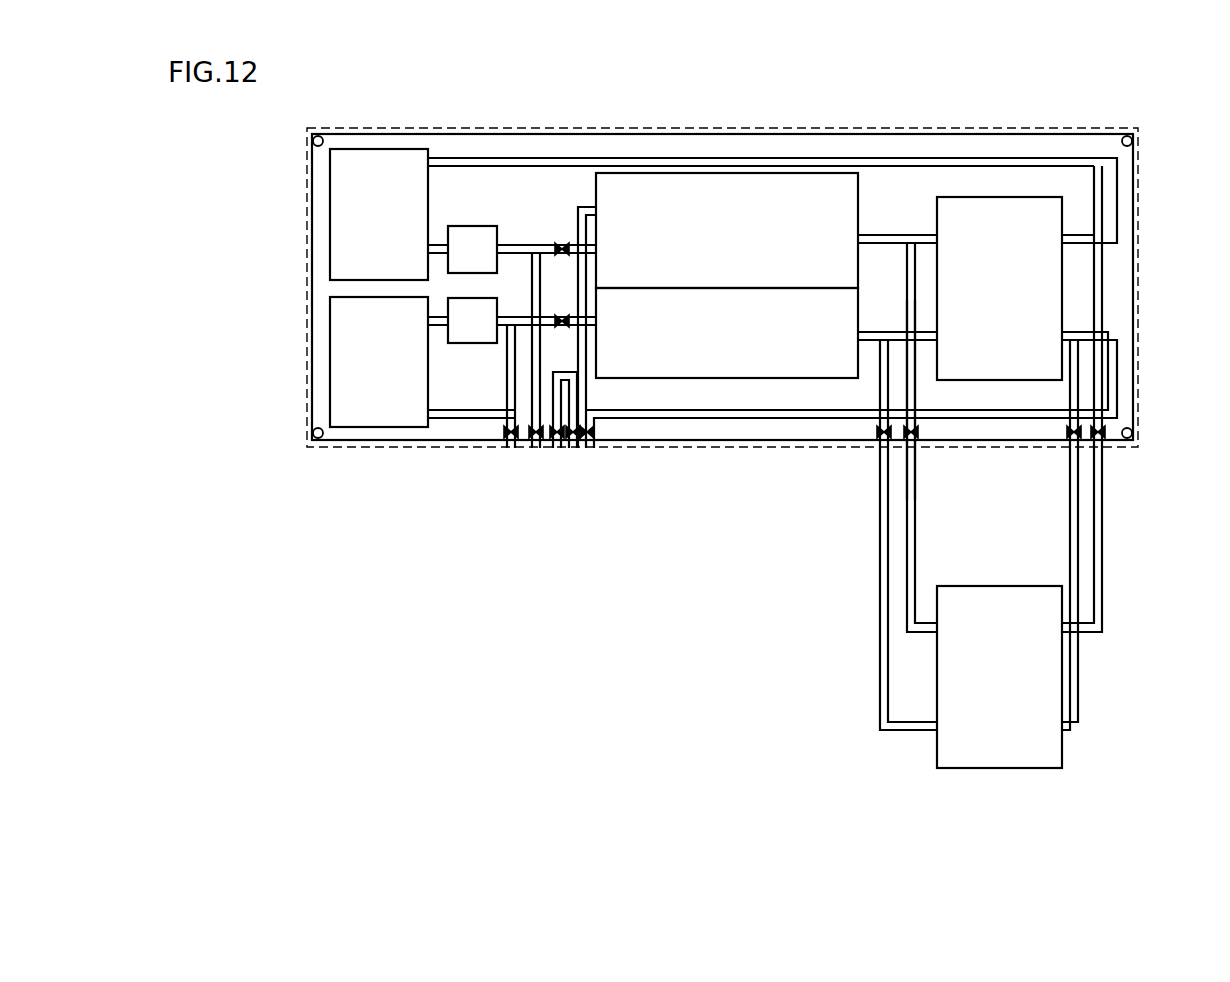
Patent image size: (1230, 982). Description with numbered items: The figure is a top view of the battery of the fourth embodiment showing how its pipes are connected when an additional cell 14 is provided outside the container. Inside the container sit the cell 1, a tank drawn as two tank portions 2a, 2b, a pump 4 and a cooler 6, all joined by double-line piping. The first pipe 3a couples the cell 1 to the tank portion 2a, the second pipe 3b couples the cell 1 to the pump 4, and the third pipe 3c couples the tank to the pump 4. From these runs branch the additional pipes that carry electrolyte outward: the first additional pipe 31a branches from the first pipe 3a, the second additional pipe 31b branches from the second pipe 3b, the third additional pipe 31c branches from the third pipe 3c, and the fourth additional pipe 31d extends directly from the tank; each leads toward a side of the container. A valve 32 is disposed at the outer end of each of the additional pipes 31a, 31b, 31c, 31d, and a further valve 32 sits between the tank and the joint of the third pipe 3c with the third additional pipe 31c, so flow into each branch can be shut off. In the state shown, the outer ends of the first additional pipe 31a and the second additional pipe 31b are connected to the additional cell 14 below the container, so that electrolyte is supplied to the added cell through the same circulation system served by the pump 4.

The cell 1 is at (999, 215).
The tank 2a is at (728, 187).
The second heat exchanger section 2b is at (793, 300).
The first pipe 3a is at (877, 240).
The second pipe 3b is at (660, 162).
The third pipe 3c is at (506, 246).
The pump 4 is at (473, 237).
The cooler 6 is at (348, 216).
The additional cell 14 is at (996, 713).
The first additional pipe 31a is at (910, 287).
The second additional pipe 31b is at (1100, 287).
The third additional pipe 31c is at (534, 287).
The fourth additional pipe 31d is at (574, 222).
The valve 32 is at (560, 240).